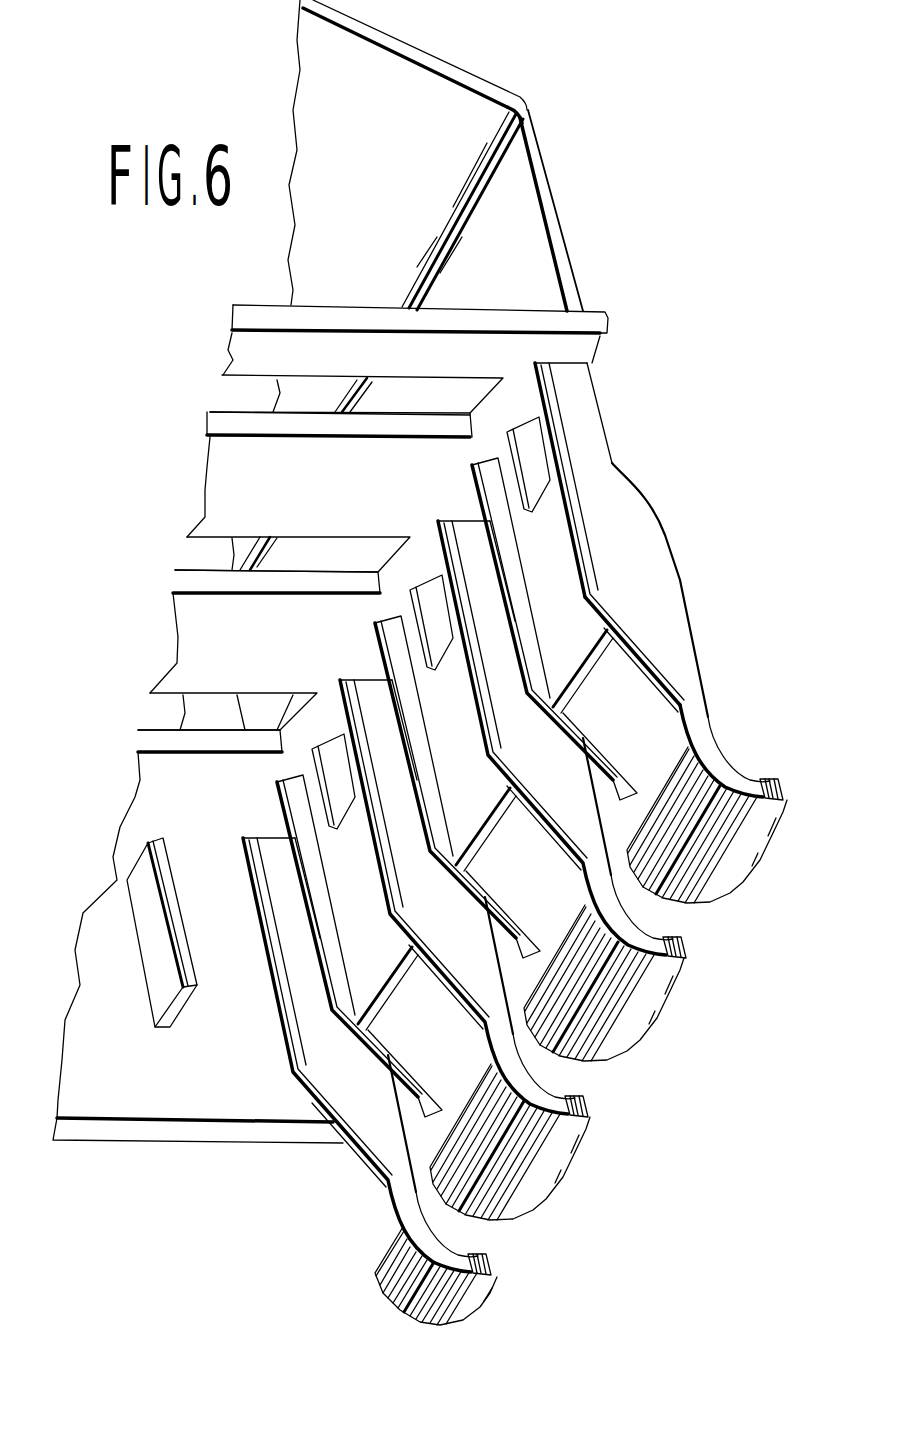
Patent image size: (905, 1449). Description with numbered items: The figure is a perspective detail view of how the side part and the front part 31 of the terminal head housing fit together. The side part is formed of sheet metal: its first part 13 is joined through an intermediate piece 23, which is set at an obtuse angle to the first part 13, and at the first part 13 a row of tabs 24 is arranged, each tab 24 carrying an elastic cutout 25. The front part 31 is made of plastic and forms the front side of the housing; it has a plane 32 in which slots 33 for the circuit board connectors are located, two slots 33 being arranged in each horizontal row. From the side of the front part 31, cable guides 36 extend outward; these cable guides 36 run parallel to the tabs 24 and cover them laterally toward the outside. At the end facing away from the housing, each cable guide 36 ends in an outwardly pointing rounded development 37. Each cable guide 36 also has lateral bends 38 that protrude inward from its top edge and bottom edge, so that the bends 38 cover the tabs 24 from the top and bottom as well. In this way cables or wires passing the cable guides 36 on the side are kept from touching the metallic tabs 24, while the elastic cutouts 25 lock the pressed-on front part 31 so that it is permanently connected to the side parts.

The first part 13 is at (557, 218).
The intermediate piece 23 is at (427, 58).
The tab 24 is at (573, 643).
The elastic cutout 25 is at (528, 452).
The front part 31 is at (593, 317).
The plane 32 is at (582, 348).
The slot 33 is at (560, 393).
The cable guide 36 is at (625, 698).
The rounded development 37 is at (782, 790).
The lateral bend 38 is at (617, 553).